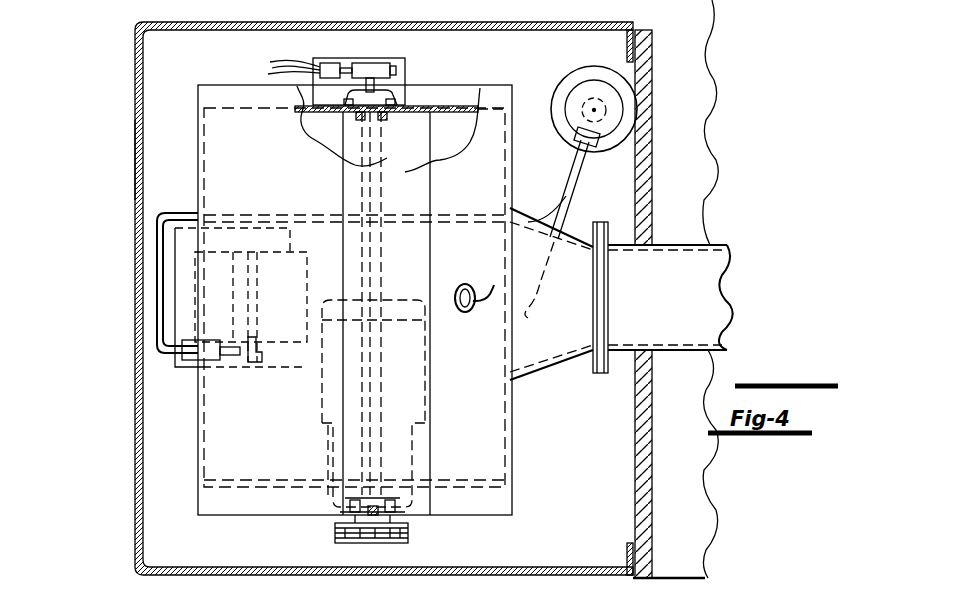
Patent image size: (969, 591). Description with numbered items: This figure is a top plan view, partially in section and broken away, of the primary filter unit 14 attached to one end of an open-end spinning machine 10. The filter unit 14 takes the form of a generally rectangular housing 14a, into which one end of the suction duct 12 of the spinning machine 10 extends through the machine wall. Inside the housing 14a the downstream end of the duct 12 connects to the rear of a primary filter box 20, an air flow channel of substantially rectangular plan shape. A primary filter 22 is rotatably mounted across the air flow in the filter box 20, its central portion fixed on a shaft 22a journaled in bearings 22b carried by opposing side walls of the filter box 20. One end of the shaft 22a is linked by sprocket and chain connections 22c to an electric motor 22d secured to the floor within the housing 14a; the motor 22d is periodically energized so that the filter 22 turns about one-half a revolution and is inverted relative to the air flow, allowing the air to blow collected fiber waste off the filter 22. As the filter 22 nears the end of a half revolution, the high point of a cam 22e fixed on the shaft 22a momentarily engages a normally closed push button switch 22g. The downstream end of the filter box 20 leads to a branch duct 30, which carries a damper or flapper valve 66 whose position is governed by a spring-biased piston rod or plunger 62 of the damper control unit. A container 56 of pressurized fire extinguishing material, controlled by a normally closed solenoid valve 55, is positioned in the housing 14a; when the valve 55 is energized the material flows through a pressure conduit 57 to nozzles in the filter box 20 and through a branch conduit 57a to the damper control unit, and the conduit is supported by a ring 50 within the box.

The open-end spinning machine 10 is at (644, 32).
The suction duct 12 is at (706, 245).
The primary filter unit 14 is at (122, 44).
The housing 14a is at (135, 157).
The primary filter box 20 is at (528, 466).
The primary filter 22 is at (396, 153).
The shaft 22a is at (392, 63).
The bearings 22b is at (397, 95).
The sprocket and chain connections 22c is at (408, 535).
The electric motor 22d is at (330, 458).
The cam 22e is at (373, 62).
The push button switch 22g is at (325, 62).
The branch duct 30 is at (330, 242).
The ring 50 is at (462, 312).
The solenoid valve 55 is at (594, 100).
The container 56 is at (562, 104).
The pressure line or conduit 57 is at (534, 312).
The branch conduit 57a is at (300, 214).
The piston rod or plunger 62 is at (238, 362).
The damper or flapper valve 66 is at (280, 362).